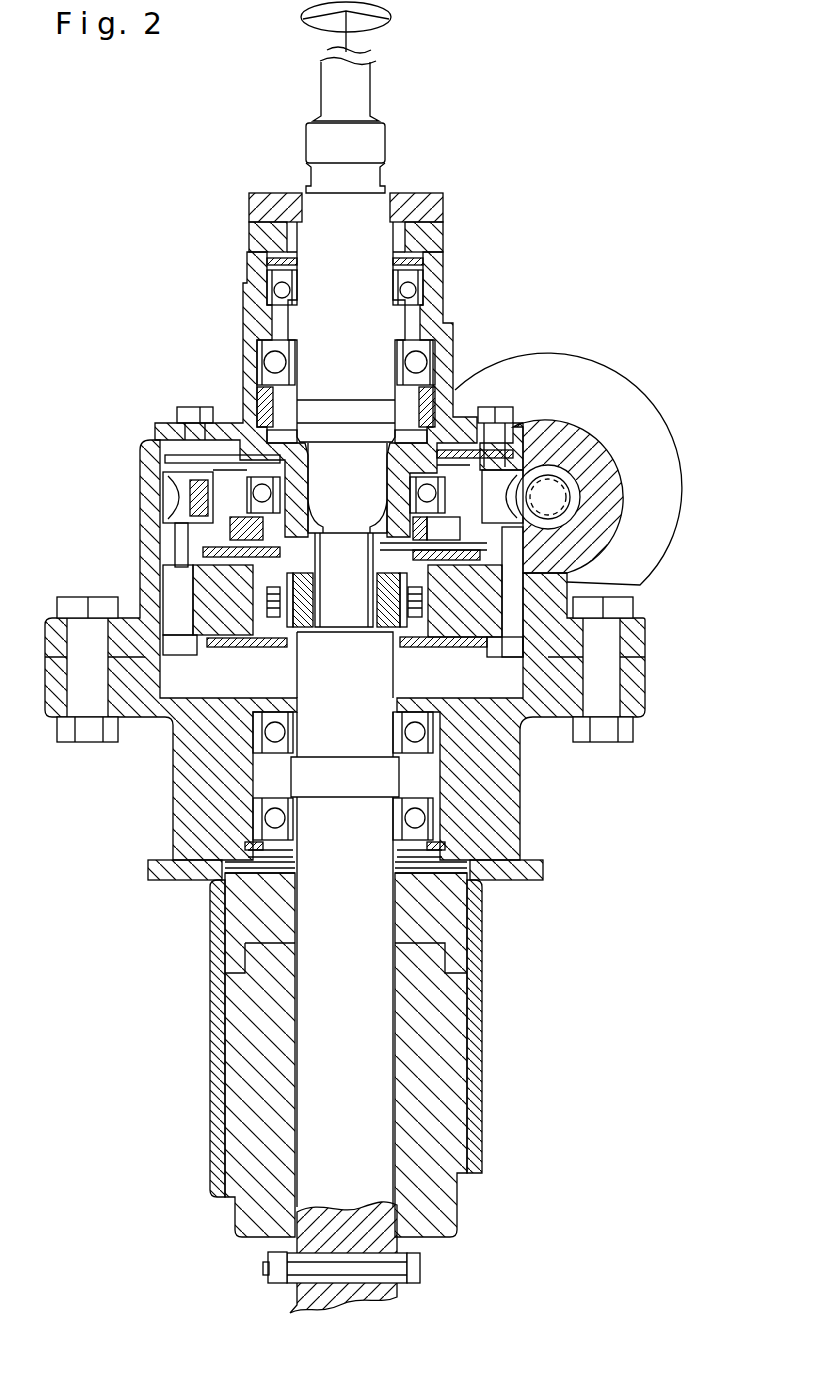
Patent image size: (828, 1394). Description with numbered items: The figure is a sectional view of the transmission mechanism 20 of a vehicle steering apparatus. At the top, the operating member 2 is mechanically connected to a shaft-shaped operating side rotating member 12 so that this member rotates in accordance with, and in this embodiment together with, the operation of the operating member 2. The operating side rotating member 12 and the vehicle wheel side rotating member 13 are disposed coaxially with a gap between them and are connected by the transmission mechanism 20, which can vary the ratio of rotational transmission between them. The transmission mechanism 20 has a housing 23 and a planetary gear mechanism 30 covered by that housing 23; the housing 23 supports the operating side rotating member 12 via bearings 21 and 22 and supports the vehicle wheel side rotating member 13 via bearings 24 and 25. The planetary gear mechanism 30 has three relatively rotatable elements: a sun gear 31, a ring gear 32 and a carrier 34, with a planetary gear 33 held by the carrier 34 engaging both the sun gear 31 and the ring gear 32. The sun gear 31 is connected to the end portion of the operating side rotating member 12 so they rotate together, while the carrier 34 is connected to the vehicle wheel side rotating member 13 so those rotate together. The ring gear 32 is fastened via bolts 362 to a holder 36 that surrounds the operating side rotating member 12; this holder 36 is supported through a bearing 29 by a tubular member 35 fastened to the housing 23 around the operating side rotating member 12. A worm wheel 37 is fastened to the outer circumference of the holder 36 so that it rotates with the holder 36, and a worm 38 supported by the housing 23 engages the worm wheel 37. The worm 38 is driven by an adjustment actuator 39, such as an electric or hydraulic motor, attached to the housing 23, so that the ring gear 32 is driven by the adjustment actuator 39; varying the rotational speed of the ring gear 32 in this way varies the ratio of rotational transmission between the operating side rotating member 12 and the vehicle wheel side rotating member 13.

The operating member 2 is at (390, 19).
The operating side rotating member 12 is at (375, 148).
The vehicle wheel side rotating member 13 is at (340, 1045).
The transmission mechanism 20 is at (338, 345).
The bearing 21 is at (410, 290).
The bearing 22 is at (418, 362).
The housing 23 is at (248, 340).
The bearing 24 is at (275, 735).
The bearing 25 is at (275, 818).
The bearing 29 is at (212, 438).
The planetary gear mechanism 30 is at (176, 725).
The sun gear 31 is at (388, 605).
The ring gear 32 is at (485, 612).
The planetary gear 33 is at (418, 610).
The carrier 34 is at (272, 650).
The tubular member 35 is at (258, 470).
The holder 36 is at (175, 540).
The worm wheel 37 is at (172, 492).
The worm 38 is at (552, 492).
The adjustment actuator 39 is at (640, 410).
The bolts 362 is at (178, 584).